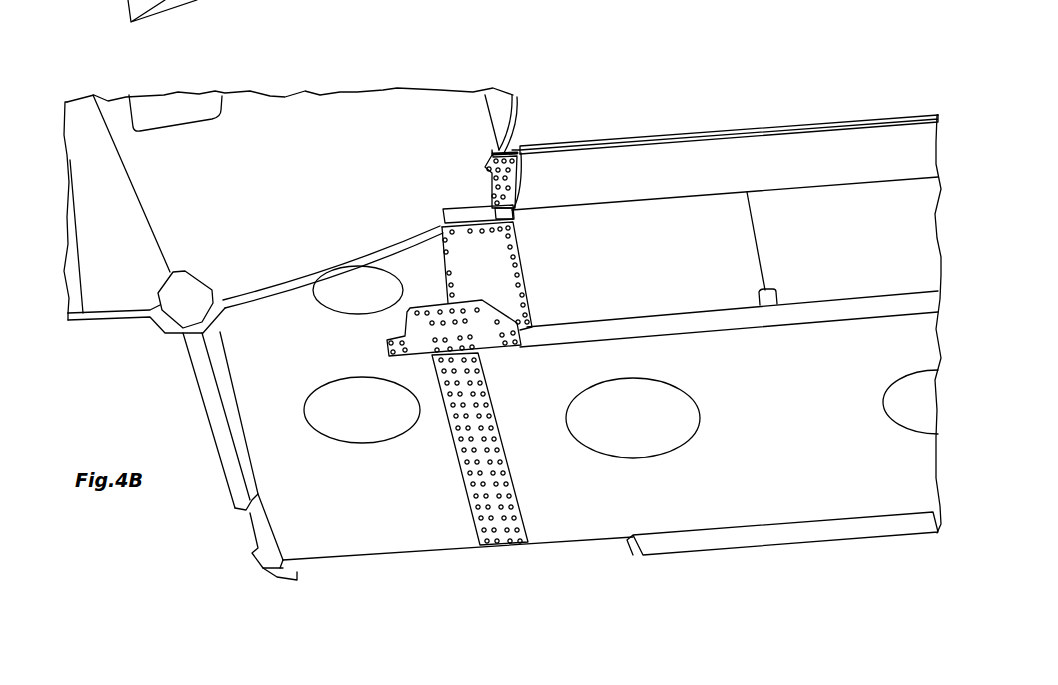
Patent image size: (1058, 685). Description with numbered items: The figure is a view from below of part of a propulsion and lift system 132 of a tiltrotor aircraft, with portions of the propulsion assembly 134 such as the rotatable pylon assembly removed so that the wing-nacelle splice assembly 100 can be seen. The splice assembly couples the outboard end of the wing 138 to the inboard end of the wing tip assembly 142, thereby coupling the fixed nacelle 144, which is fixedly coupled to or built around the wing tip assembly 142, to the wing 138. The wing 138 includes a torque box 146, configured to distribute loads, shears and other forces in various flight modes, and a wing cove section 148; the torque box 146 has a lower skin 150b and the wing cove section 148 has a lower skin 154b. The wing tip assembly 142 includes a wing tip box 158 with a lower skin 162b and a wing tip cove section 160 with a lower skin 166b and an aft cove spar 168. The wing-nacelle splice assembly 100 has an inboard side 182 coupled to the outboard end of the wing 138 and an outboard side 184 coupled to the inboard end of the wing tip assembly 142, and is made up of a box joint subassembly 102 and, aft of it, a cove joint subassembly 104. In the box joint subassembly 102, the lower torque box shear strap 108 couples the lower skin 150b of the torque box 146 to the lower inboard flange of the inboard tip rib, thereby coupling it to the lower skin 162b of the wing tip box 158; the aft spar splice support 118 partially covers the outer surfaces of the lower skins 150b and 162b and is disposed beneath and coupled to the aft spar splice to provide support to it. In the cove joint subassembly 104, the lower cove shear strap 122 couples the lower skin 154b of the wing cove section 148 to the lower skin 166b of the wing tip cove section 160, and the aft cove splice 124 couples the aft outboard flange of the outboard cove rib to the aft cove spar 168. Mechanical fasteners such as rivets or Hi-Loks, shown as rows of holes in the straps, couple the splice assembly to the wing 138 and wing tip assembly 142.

The wing-nacelle splice assembly 100 is at (525, 505).
The box joint subassembly 102 is at (532, 530).
The cove joint subassembly 104 is at (530, 256).
The lower torque box shear strap 108 is at (492, 405).
The aft spar splice support 118 is at (387, 347).
The lower cove shear strap 122 is at (529, 287).
The aft cove splice 124 is at (510, 192).
The propulsion and lift system 132 is at (568, 72).
The propulsion assembly 134 is at (82, 327).
The wing 138 is at (835, 140).
The wing tip assembly 142 is at (285, 508).
The fixed nacelle 144 is at (120, 318).
The torque box 146 is at (735, 487).
The wing cove section 148 is at (757, 150).
The lower skin of torque box 150b is at (730, 324).
The lower skin of wing cove section 154b is at (725, 229).
The wing tip box 158 is at (257, 397).
The wing tip cove section 160 is at (397, 262).
The lower skin of wing tip box 162b is at (365, 533).
The lower skin of wing tip cove section 166b is at (417, 253).
The aft cove spar 168 is at (472, 202).
The inboard side of wing-nacelle splice assembly 182 is at (484, 372).
The outboard side of wing-nacelle splice assembly 184 is at (463, 495).